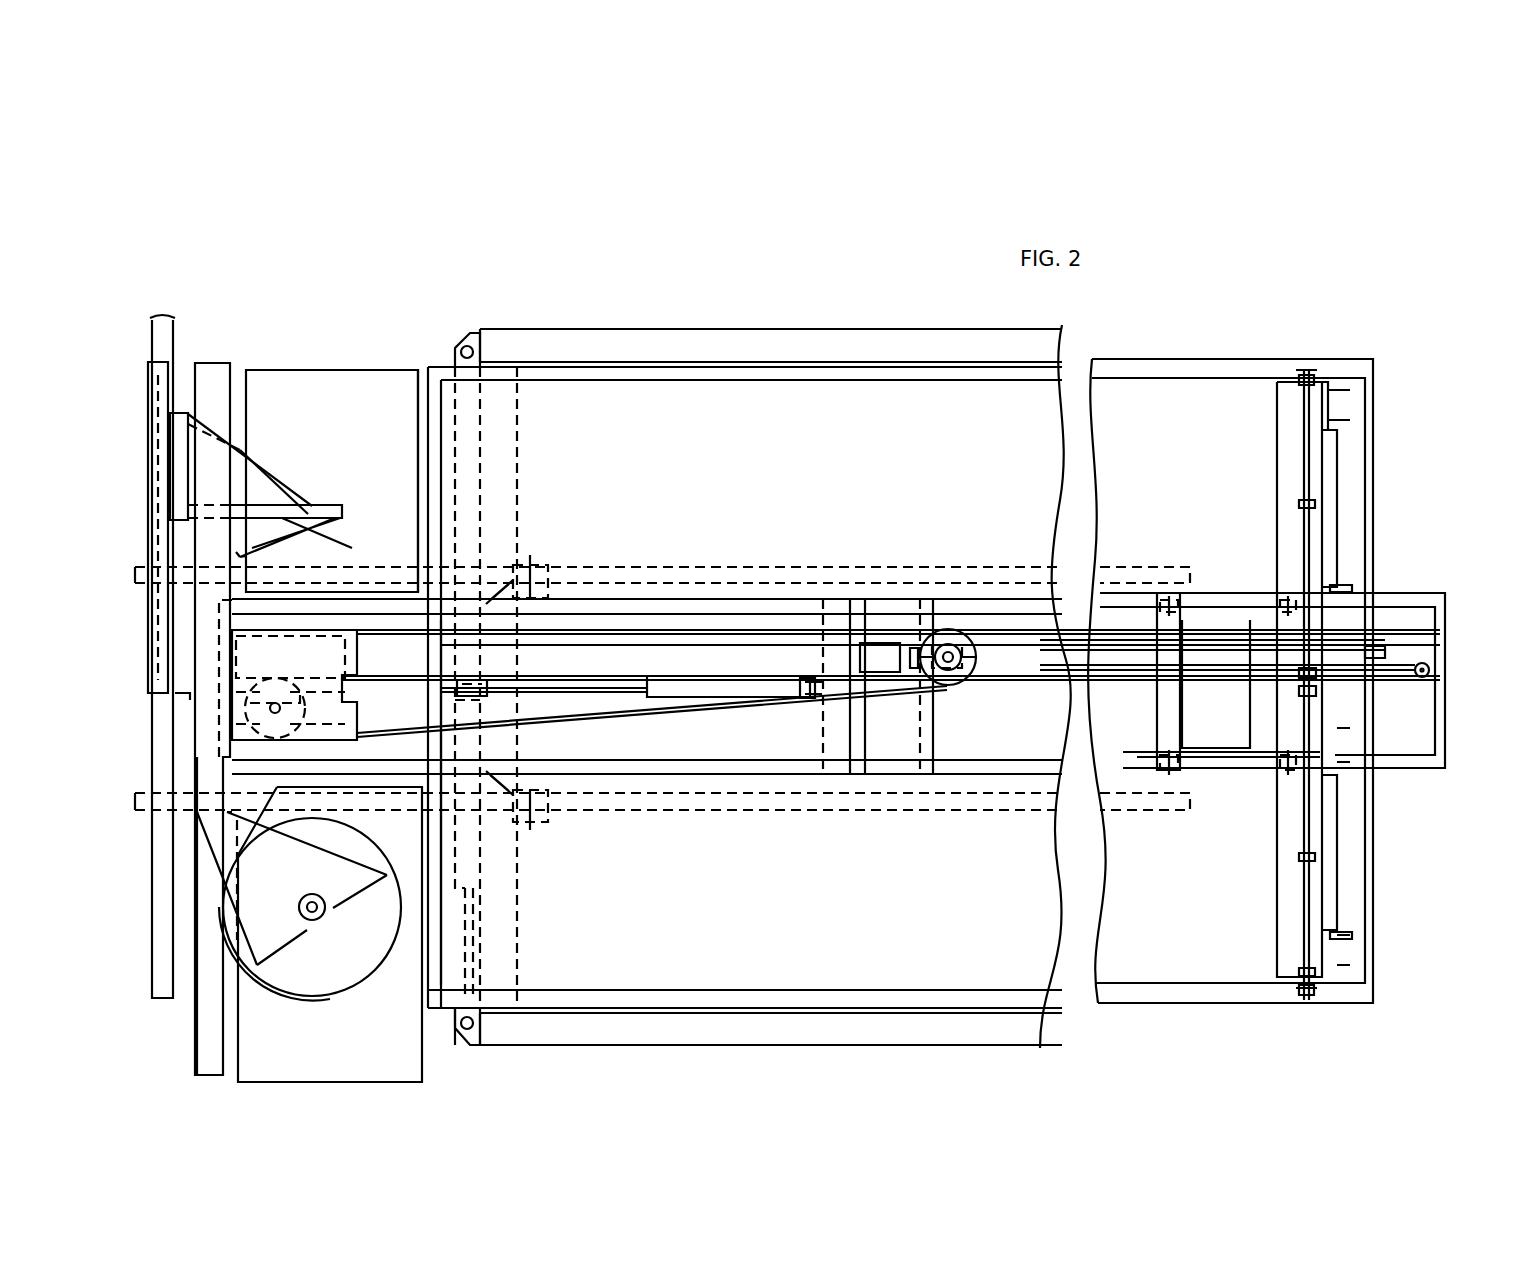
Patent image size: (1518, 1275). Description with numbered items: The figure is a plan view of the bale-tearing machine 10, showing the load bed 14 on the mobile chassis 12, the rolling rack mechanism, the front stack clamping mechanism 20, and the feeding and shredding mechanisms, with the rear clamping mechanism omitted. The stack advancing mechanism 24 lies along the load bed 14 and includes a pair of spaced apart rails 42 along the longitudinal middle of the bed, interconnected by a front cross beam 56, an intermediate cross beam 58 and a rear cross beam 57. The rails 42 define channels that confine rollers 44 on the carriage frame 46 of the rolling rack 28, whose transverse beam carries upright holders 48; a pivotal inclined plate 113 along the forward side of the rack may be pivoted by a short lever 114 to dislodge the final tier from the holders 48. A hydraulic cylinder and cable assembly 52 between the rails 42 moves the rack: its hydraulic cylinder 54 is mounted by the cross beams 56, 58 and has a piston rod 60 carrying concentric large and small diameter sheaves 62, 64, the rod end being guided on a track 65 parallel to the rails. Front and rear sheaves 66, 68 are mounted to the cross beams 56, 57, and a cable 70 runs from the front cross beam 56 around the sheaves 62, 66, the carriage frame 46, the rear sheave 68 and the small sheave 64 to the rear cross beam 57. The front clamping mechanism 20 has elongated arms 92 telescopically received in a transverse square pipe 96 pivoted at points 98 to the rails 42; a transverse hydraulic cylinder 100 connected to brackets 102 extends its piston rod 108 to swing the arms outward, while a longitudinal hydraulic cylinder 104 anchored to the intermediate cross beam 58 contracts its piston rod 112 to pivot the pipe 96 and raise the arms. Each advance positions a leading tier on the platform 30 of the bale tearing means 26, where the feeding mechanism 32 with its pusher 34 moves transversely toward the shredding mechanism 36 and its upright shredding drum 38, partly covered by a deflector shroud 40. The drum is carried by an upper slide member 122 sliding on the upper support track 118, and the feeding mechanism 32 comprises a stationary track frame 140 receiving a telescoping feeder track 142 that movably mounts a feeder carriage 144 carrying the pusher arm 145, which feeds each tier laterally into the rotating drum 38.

The machine 10 is at (388, 292).
The mobile chassis 12 is at (820, 568).
The load bed 14 is at (609, 802).
The front stack clamping mechanism 20 is at (464, 1036).
The stack advancing mechanism 24 is at (748, 622).
The bale tearing means 26 is at (292, 350).
The rolling rack 28 is at (1271, 560).
The platform 30 is at (400, 370).
The feeding mechanism 32 is at (195, 372).
The pusher 34 is at (320, 456).
The shredding mechanism 36 is at (381, 1085).
The shredding drum 38 is at (310, 906).
The deflector shroud 40 is at (272, 1082).
The rails 42 is at (715, 640).
The rollers 44 is at (1278, 600).
The carriage frame 46 is at (1258, 700).
The transverse beam and upright holders 48 is at (1342, 592).
The hydraulic cylinder and cable assembly 52 is at (1024, 642).
The hydraulic cylinder 54 is at (891, 662).
The front cross beam 56 is at (220, 626).
The rear cross beam 57 is at (1447, 746).
The intermediate cross beam 58 is at (825, 722).
The piston rod 60 is at (888, 672).
The large diameter sheave 62 is at (955, 641).
The small diameter sheave 64 is at (950, 680).
The track 65 is at (1130, 645).
The front sheave 66 is at (302, 716).
The rear sheave 68 is at (1430, 674).
The cable 70 is at (628, 708).
The elongated arms 92 is at (712, 332).
The transverse square pipe 96 is at (517, 927).
The pivot points 98 is at (535, 566).
The transverse hydraulic cylinder 100 is at (470, 493).
The brackets 102 is at (460, 328).
The longitudinal hydraulic cylinder 104 is at (705, 699).
The piston rod 108 is at (483, 962).
The piston rod 112 is at (562, 690).
The inclined plate 113 is at (1305, 873).
The lever 114 is at (1307, 370).
The upper support track 118 is at (205, 1078).
The upper slide member 122 is at (215, 833).
The stationary track frame 140 is at (160, 998).
The telescoping feeder track 142 is at (168, 544).
The feeder carriage 144 is at (180, 485).
The pusher arm 145 is at (342, 508).